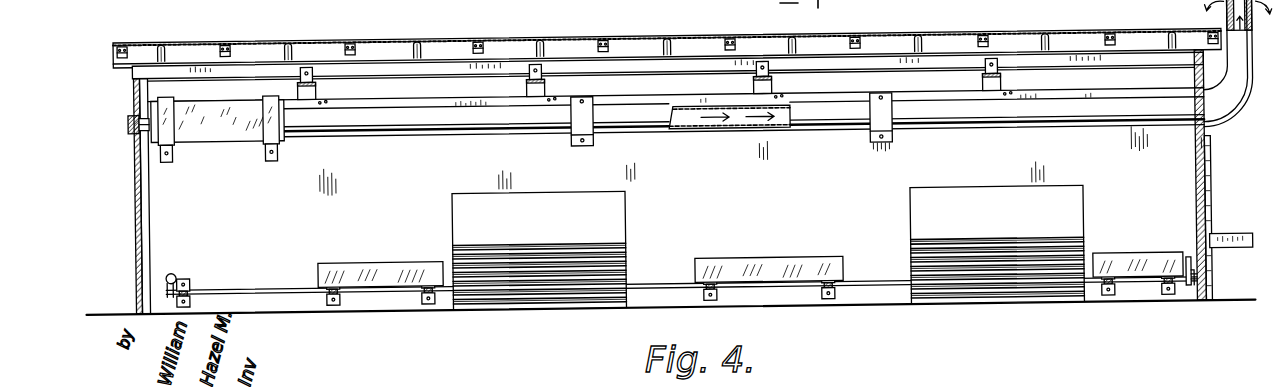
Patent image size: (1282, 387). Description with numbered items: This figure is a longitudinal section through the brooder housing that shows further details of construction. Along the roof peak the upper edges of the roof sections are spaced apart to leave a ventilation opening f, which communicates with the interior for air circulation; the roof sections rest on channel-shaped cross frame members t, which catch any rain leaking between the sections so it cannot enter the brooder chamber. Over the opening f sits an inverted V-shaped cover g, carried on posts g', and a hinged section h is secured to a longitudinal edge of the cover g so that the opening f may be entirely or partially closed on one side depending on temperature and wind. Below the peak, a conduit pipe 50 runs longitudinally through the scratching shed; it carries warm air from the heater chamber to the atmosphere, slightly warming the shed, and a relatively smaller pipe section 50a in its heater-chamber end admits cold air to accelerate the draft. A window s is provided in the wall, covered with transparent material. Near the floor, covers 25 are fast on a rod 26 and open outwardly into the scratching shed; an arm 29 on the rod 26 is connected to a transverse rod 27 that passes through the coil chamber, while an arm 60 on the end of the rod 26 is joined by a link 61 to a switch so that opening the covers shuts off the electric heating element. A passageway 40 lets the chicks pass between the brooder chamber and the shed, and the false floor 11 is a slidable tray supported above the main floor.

The inverted V-shaped cover g is at (667, 34).
The post g' is at (666, 30).
The hinged section h is at (113, 65).
The ventilation opening f is at (505, 63).
The window s is at (1210, 199).
The conduit pipe 50 is at (415, 130).
The smaller pipe section 50a is at (114, 127).
The cross frame member t is at (312, 83).
The rod 26 is at (275, 292).
The passageway 40 is at (768, 247).
The cover 25 is at (377, 266).
The arm 60 is at (167, 274).
The link 61 is at (180, 278).
The arm 29 is at (1188, 272).
The rod 27 is at (1197, 283).
The false floor 11 is at (1230, 263).